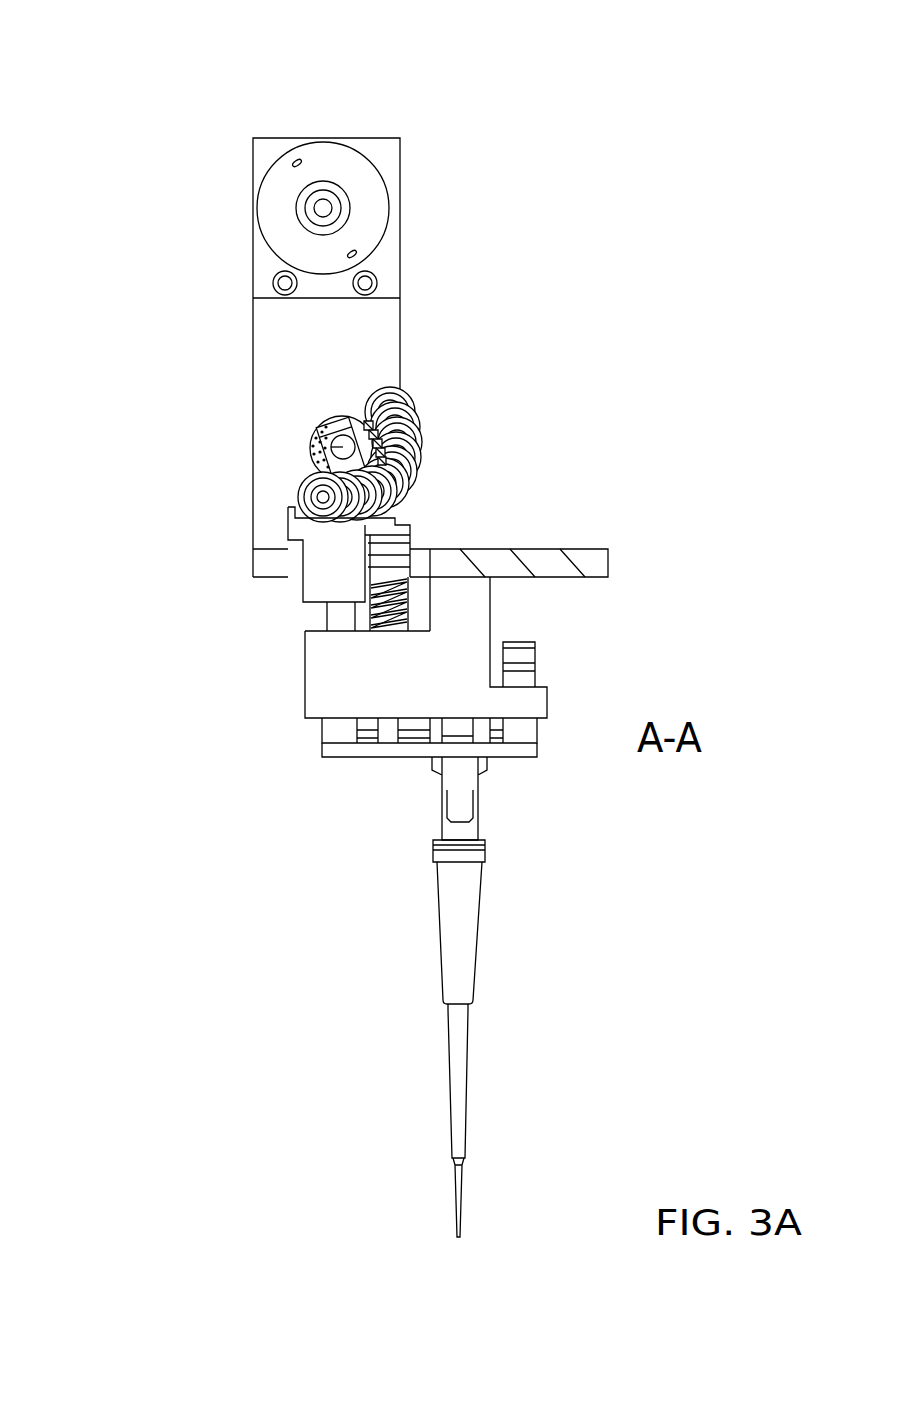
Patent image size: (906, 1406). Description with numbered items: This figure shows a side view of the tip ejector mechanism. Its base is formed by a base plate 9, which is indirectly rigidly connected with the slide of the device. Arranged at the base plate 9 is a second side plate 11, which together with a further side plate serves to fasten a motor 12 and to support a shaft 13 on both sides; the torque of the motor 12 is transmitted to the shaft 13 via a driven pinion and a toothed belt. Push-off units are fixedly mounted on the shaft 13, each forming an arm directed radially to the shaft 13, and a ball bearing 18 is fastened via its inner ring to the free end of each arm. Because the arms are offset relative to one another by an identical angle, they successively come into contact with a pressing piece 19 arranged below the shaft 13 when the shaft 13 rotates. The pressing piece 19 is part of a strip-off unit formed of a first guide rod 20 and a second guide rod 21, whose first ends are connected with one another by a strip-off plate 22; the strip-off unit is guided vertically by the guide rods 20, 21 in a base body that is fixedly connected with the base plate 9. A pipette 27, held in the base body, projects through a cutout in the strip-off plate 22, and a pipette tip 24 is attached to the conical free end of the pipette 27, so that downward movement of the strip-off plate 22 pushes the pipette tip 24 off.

The base plate 9 is at (552, 557).
The second side plate 11 is at (307, 335).
The motor 12 is at (348, 163).
The shaft 13 is at (317, 432).
The ball bearing 18 is at (303, 482).
The pressing piece 19 is at (339, 557).
The first guide rod 20 is at (337, 620).
The second guide rod 21 is at (525, 727).
The strip-off plate 22 is at (357, 750).
The pipette tip 24 is at (457, 920).
The pipette 27 is at (458, 777).